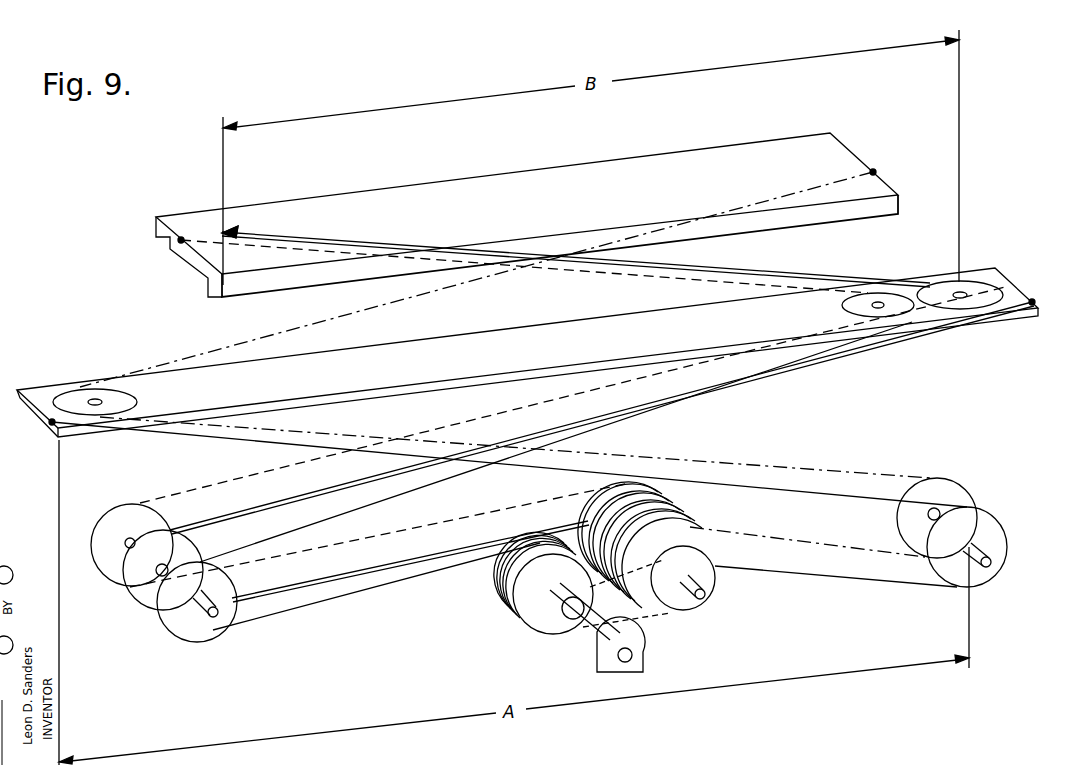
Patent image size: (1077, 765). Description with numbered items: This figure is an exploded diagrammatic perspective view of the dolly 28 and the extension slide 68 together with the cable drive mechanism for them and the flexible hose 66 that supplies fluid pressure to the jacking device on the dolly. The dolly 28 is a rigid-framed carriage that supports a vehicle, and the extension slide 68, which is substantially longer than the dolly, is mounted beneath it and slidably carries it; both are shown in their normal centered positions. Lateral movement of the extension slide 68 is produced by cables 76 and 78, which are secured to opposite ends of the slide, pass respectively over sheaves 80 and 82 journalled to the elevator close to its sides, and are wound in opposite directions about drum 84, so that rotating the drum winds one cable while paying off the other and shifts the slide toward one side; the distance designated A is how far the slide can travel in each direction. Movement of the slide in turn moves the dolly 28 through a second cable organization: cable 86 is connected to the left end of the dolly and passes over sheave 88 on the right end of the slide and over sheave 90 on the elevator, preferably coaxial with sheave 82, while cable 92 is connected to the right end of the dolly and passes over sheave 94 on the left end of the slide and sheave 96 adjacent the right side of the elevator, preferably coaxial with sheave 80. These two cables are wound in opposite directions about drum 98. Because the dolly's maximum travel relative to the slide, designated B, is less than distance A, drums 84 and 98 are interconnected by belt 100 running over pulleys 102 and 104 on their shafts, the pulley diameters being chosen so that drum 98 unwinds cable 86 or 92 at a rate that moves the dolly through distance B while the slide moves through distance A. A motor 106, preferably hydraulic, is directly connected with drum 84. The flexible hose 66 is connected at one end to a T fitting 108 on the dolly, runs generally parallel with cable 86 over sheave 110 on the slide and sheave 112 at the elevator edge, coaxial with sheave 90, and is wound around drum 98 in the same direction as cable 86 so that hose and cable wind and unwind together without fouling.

The dolly 28 is at (544, 170).
The flexible hose 66 is at (763, 267).
The extension slide 68 is at (551, 325).
The cable 76 is at (225, 440).
The cable 78 is at (747, 390).
The sheave 80 is at (1008, 548).
The sheave 82 is at (165, 630).
The drum 84 is at (530, 630).
The cable 86 is at (662, 286).
The sheave 88 is at (842, 306).
The sheave 90 is at (97, 573).
The cable 92 is at (354, 312).
The sheave 94 is at (137, 402).
The sheave 96 is at (897, 524).
The drum 98 is at (648, 497).
The belt 100 is at (643, 620).
The pulley 102 is at (568, 630).
The pulley 104 is at (717, 585).
The motor 106 is at (593, 655).
The T fitting 108 is at (213, 228).
The sheave 110 is at (998, 292).
The sheave 112 is at (128, 602).